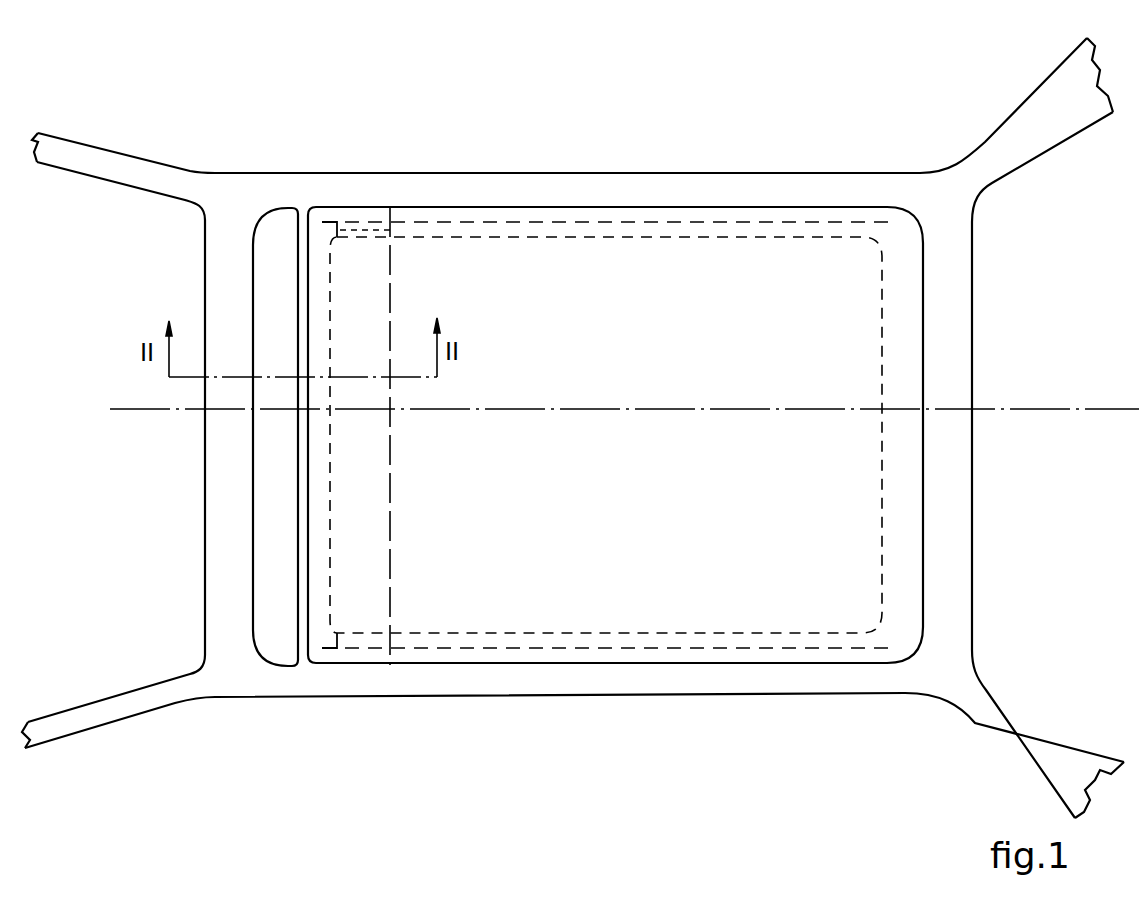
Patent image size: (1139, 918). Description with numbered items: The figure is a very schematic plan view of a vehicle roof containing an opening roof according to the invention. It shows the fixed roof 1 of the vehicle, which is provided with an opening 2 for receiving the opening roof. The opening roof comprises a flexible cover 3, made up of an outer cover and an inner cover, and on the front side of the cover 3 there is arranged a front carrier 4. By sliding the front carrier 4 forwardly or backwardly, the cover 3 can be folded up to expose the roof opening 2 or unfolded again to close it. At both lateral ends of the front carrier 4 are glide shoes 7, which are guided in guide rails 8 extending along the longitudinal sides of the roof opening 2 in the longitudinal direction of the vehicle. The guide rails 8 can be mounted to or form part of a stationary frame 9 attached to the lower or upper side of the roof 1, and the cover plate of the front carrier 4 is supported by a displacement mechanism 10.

The fixed roof 1 is at (593, 188).
The opening 2 is at (620, 237).
The flexible cover 3 is at (528, 260).
The front carrier 4 is at (380, 282).
The glide shoes 7 is at (355, 225).
The guide rails 8 is at (768, 227).
The stationary frame 9 is at (870, 207).
The displacement mechanism 10 is at (368, 230).